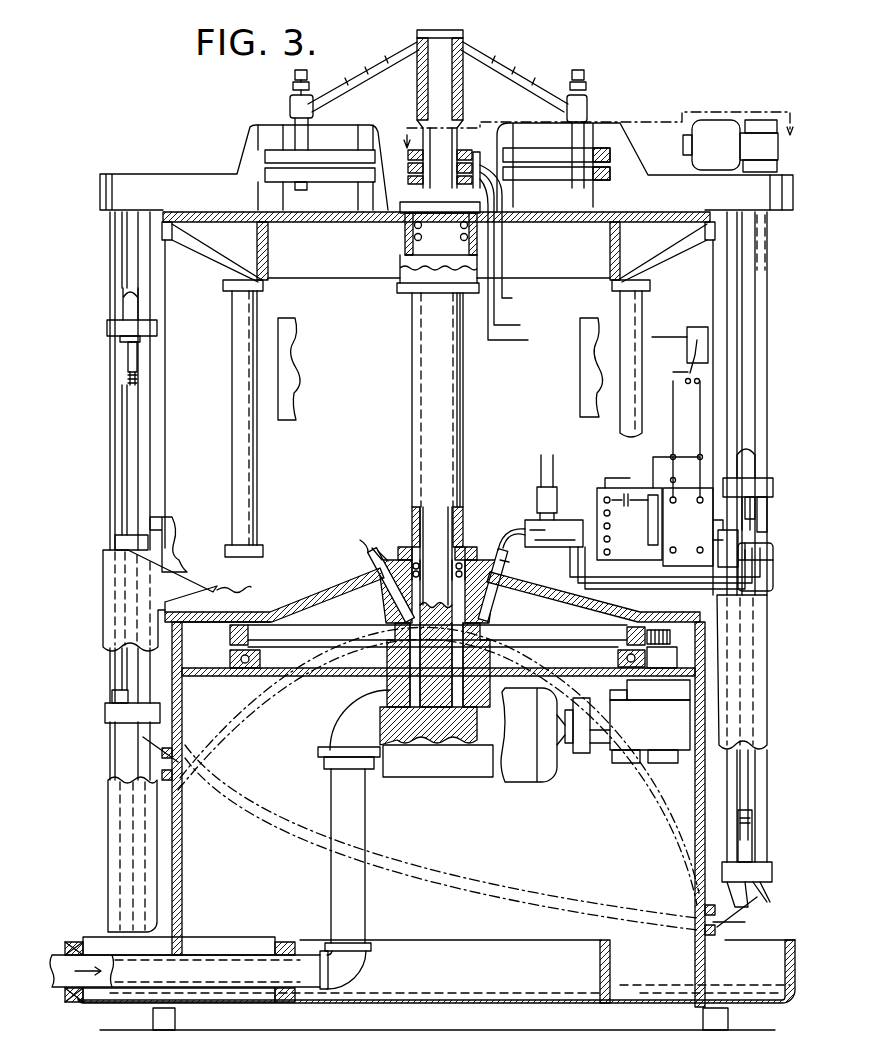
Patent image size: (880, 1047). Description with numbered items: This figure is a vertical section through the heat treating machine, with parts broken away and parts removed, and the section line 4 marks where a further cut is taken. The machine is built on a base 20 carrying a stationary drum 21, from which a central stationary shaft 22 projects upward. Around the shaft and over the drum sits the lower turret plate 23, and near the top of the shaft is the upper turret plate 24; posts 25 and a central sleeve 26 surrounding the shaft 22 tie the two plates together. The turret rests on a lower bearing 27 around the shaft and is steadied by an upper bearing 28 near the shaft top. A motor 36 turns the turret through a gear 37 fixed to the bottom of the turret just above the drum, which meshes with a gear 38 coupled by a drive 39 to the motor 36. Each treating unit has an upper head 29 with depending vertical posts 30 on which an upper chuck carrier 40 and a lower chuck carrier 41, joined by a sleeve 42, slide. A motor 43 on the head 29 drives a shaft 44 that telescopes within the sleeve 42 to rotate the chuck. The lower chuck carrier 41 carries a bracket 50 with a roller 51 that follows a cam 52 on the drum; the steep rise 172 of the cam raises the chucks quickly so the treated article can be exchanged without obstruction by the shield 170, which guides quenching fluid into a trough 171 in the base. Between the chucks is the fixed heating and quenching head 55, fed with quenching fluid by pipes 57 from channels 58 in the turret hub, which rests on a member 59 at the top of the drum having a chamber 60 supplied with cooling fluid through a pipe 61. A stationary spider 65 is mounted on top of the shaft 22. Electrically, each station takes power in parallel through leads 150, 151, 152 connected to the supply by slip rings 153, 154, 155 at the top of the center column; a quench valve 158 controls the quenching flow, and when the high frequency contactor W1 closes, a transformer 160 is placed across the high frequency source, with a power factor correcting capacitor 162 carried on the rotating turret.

The section line 4- 4 is at (594, 118).
The base 20 is at (698, 950).
The stationary drum 21 is at (698, 838).
The central stationary shaft 22 is at (432, 518).
The lower turret plate 23 is at (348, 584).
The upper turret plate 24 is at (328, 222).
The posts 25 is at (258, 490).
The central sleeve 26 is at (425, 480).
The lower bearing 27 is at (425, 560).
The upper bearing 28 is at (400, 232).
The upper head 29 is at (163, 172).
The vertical posts 30 is at (107, 249).
The motor 36 is at (533, 780).
The gear 37 is at (230, 635).
The gear 38 is at (670, 637).
The drive 39 is at (605, 755).
The upper chuck carrier 40 is at (770, 480).
The lower chuck carrier 41 is at (768, 872).
The sleeve 42 is at (110, 381).
The motor 43 is at (695, 140).
The shaft 44 is at (115, 278).
The bracket 50 is at (760, 910).
The roller 51 is at (735, 922).
The cam 52 is at (178, 775).
The heating and quenching head 55 is at (767, 540).
The pipes 57 is at (712, 600).
The channels 58 is at (385, 600).
The member 59 is at (392, 640).
The chamber 60 is at (380, 693).
The pipe 61 is at (332, 798).
The stationary spider 65 is at (404, 54).
The lead 150 is at (512, 298).
The lead 151 is at (520, 325).
The lead 152 is at (528, 340).
The slip ring 153 is at (408, 152).
The slip ring 154 is at (410, 167).
The slip ring 155 is at (410, 180).
The quench valve 158 is at (556, 500).
The transformer 160 is at (713, 480).
The power factor correcting capacitor 162 is at (630, 490).
The shield 170 is at (112, 826).
The trough 171 is at (95, 937).
The steep rise 172 is at (655, 810).
The high frequency contactor W1 is at (687, 350).